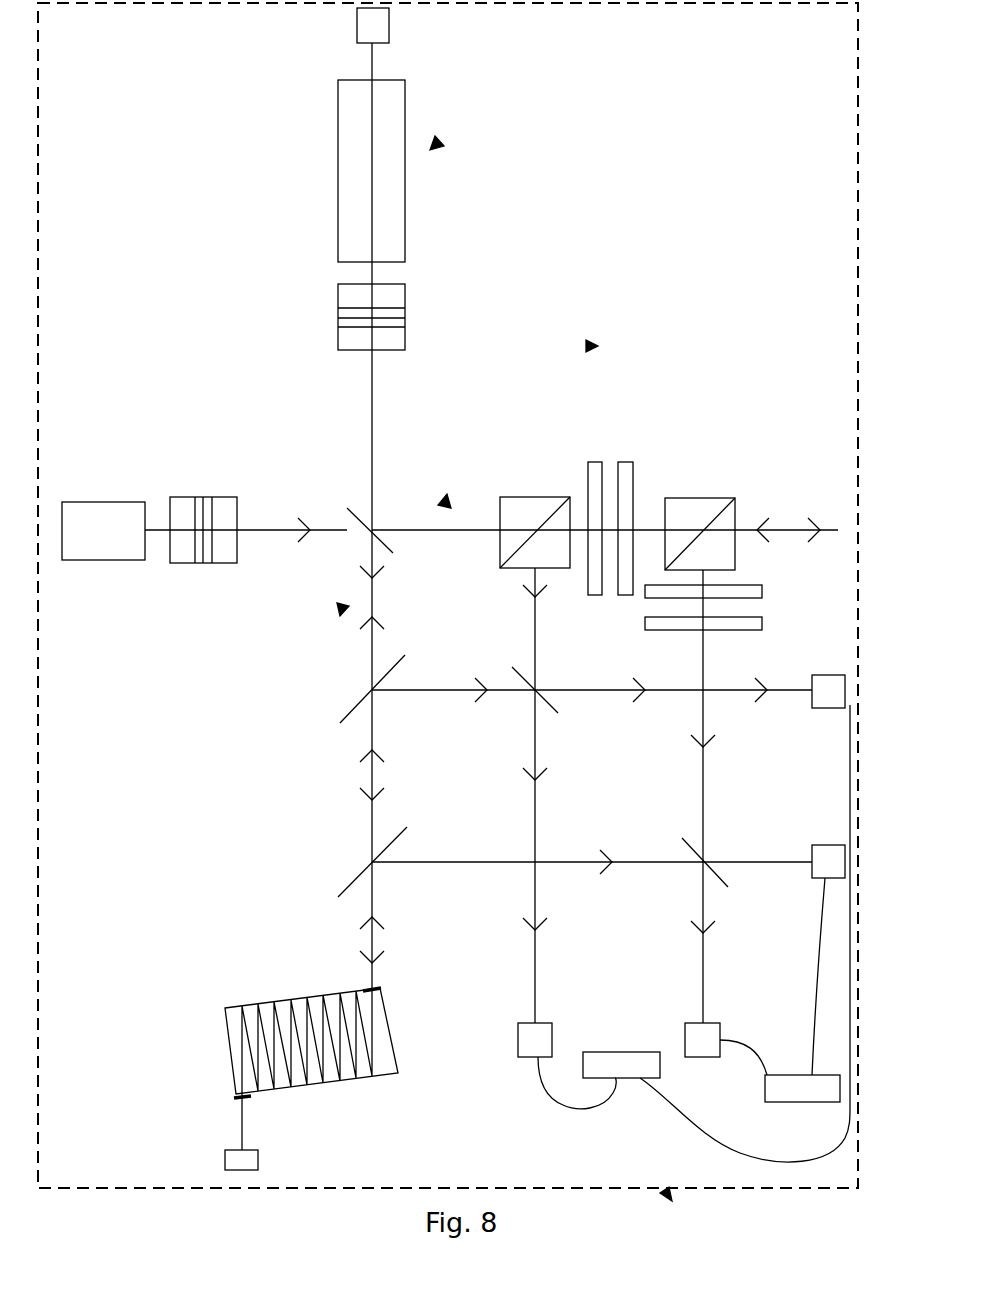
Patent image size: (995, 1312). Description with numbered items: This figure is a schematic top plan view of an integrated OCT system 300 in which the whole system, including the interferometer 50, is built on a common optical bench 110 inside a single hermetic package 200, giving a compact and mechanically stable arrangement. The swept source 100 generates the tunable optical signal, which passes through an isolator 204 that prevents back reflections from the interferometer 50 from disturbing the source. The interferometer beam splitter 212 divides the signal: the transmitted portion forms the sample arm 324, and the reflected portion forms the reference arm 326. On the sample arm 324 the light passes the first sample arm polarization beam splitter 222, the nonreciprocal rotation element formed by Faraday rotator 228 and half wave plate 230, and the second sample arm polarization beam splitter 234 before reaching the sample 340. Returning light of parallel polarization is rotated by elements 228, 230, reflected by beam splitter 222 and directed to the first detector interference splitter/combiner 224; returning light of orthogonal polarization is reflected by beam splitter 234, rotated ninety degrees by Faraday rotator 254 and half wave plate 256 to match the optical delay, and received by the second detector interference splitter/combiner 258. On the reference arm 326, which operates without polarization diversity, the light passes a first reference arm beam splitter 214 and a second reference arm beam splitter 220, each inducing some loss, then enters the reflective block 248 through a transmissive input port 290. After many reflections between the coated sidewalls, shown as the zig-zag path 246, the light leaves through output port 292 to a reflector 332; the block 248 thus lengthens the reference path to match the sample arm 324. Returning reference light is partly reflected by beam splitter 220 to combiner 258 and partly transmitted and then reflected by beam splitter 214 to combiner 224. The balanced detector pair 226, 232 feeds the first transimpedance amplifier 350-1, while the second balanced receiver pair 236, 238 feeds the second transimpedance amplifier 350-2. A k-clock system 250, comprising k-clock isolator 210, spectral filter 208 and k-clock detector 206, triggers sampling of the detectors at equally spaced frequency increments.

The hermetic package 200 is at (448, 595).
The optical bench 110 is at (448, 595).
The swept source 100 is at (86, 562).
The isolator 204 is at (196, 497).
The k-clock detector 206 is at (357, 30).
The spectral filter 208 is at (338, 163).
The k-clock isolator 210 is at (338, 313).
The interferometer beam splitter 212 is at (347, 508).
The first reference arm beam splitter 214 is at (340, 723).
The second reference arm beam splitter 220 is at (340, 894).
The first sample arm polarization beam splitter 222 is at (545, 497).
The first detector interference splitter/combiner 224 is at (521, 683).
The balanced detector 226 is at (553, 1023).
The Faraday rotator 228 is at (590, 462).
The half wave plate 230 is at (629, 462).
The balanced detector 232 is at (830, 675).
The second sample arm polarization beam splitter 234 is at (733, 498).
The balanced receiver 236 is at (831, 845).
The balanced receiver 238 is at (721, 1023).
The folded delay path 246 is at (275, 1020).
The reflective block 248 is at (391, 1030).
The k-clock system 250 is at (435, 145).
The Faraday rotator 254 is at (762, 594).
The half wave plate 256 is at (762, 627).
The second detector interference splitter/combiner 258 is at (682, 838).
The transmissive input port 290 is at (365, 990).
The output port 292 is at (233, 1097).
The integrated OCT system 300 is at (670, 1204).
The sample arm 324 is at (448, 503).
The reference arm 326 is at (339, 609).
The reflector 332 is at (225, 1161).
The sample 340 is at (831, 531).
The first transimpedance amplifier 350-1 is at (621, 1065).
The second transimpedance amplifier 350-2 is at (802, 1088).
The interferometer 50 is at (589, 345).